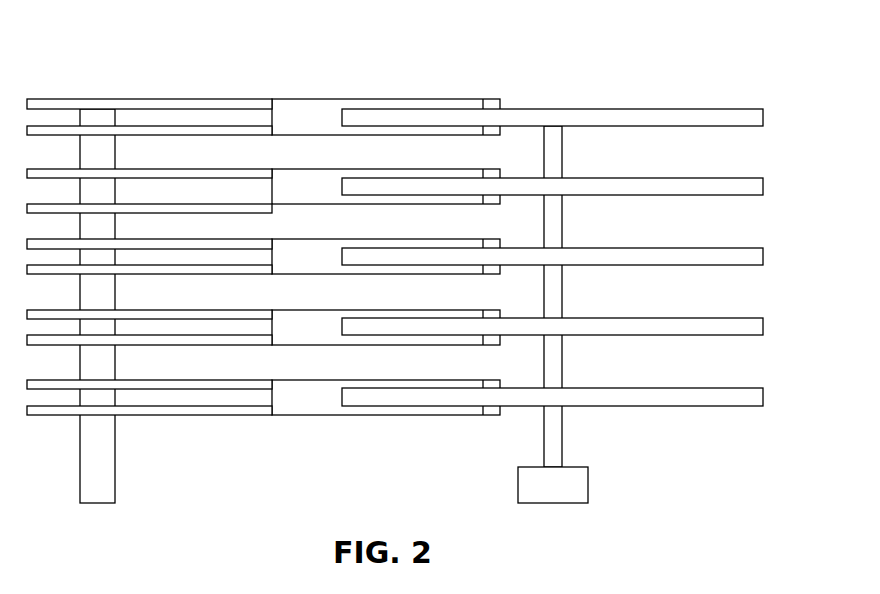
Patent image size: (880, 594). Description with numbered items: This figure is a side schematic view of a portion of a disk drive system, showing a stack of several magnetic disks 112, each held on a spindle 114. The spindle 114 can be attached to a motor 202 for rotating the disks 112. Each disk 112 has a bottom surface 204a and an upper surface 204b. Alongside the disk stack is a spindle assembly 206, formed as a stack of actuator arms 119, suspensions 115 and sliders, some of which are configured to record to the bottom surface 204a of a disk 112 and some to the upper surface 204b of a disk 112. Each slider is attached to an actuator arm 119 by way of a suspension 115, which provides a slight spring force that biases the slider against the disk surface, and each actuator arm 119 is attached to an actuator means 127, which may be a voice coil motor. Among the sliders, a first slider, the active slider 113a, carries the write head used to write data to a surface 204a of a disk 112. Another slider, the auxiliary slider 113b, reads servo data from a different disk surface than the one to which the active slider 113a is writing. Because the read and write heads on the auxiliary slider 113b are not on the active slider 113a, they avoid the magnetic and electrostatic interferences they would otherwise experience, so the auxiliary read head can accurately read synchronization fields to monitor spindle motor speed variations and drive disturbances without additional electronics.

The spindle assembly 206 is at (432, 263).
The actuator means 127 is at (115, 479).
The spindle 114 is at (562, 152).
The motor 202 is at (518, 481).
The suspension 115 is at (263, 278).
The actuator arm 119 is at (242, 390).
The magnetic disk 112 is at (590, 278).
The bottom surface 204a is at (663, 407).
The upper surface 204b is at (657, 388).
The active slider 113a is at (493, 412).
The auxiliary slider 113b is at (490, 380).